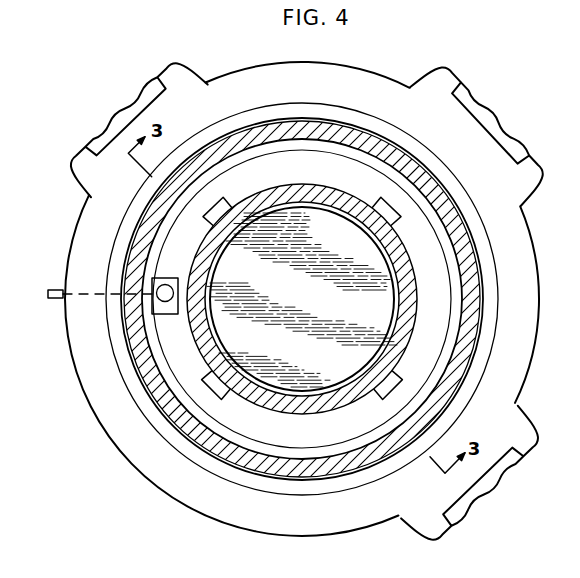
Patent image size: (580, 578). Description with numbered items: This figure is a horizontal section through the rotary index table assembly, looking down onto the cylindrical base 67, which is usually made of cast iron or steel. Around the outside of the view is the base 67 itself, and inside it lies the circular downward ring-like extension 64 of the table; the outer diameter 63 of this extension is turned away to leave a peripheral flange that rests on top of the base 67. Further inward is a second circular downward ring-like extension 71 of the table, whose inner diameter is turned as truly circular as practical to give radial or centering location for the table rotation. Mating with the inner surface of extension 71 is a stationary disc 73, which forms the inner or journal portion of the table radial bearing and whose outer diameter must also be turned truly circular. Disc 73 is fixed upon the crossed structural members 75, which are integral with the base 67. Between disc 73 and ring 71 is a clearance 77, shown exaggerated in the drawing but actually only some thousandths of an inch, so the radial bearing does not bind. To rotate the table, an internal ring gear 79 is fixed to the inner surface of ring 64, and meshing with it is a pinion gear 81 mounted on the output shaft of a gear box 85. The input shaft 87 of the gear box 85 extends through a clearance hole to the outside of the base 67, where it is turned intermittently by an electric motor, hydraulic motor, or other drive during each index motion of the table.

The outer diameter 63 is at (207, 452).
The ring-like extension 64 is at (248, 460).
The cylindrical base 67 is at (500, 303).
The ring-like extension 71 is at (387, 365).
The stationary disc 73 is at (288, 349).
The crossed structural members 75 is at (221, 196).
The clearance 77 is at (398, 317).
The internal ring gear 79 is at (223, 434).
The pinion gear 81 is at (164, 302).
The gear box 85 is at (169, 277).
The input shaft 87 is at (49, 299).